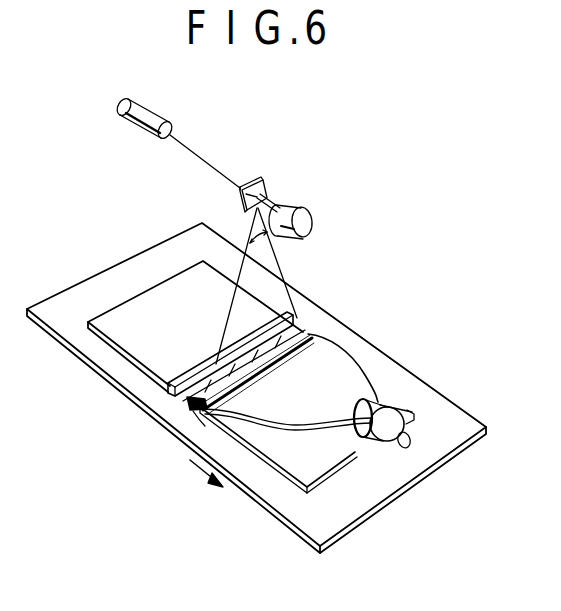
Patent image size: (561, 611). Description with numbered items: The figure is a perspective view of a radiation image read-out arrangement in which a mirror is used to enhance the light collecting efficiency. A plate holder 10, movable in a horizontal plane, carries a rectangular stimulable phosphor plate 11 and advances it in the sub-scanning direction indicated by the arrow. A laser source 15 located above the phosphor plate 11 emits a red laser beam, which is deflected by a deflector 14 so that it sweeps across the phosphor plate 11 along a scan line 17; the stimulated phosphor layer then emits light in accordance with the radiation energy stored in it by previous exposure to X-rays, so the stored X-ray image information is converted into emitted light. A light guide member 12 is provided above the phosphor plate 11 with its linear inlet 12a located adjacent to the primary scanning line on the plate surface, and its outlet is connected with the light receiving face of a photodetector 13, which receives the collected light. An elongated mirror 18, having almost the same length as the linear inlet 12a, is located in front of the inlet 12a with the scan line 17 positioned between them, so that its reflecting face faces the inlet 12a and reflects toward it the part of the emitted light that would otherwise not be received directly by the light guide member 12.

The plate holder 10 is at (100, 290).
The stimulable phosphor plate 11 is at (170, 284).
The light guide member 12 is at (342, 362).
The linear inlet 12a is at (216, 372).
The photodetector 13 is at (389, 432).
The deflector 14 is at (266, 183).
The laser source 15 is at (148, 116).
The scan line 17 is at (205, 408).
The elongated mirror 18 is at (182, 405).